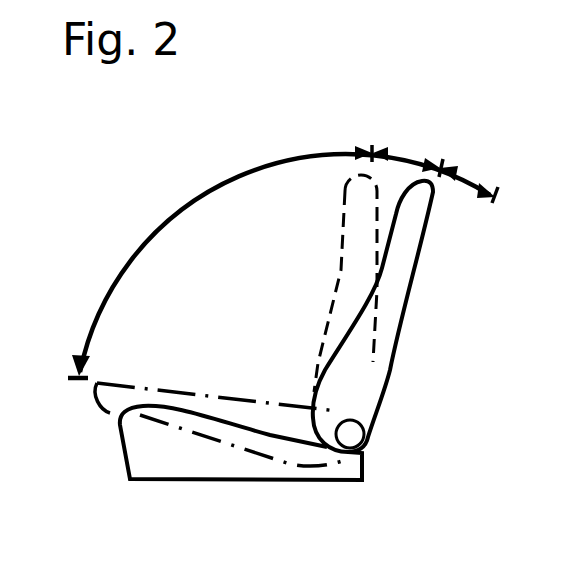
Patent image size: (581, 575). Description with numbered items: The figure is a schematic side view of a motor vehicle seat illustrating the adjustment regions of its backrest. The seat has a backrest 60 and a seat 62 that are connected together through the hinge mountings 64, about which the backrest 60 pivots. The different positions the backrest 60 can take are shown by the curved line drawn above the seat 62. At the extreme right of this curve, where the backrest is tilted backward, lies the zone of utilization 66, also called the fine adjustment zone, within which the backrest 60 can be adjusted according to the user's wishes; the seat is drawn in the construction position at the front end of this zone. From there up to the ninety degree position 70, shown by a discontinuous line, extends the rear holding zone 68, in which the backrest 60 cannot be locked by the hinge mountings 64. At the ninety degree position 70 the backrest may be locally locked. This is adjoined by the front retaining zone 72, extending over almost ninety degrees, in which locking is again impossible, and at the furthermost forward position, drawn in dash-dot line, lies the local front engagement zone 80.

The backrest 60 is at (348, 353).
The seat 62 is at (177, 465).
The hinge mounting 64 is at (350, 434).
The zone of utilization 66 is at (463, 181).
The rear holding zone 68 is at (408, 157).
The 90 degree position 70 is at (373, 147).
The front retaining zone 72 is at (208, 192).
The front engagement zone 80 is at (68, 378).